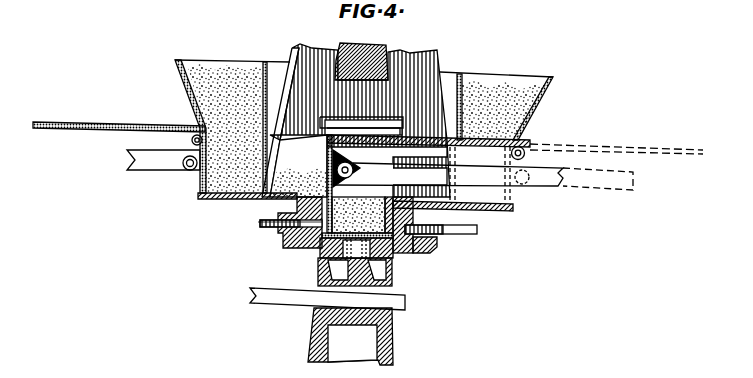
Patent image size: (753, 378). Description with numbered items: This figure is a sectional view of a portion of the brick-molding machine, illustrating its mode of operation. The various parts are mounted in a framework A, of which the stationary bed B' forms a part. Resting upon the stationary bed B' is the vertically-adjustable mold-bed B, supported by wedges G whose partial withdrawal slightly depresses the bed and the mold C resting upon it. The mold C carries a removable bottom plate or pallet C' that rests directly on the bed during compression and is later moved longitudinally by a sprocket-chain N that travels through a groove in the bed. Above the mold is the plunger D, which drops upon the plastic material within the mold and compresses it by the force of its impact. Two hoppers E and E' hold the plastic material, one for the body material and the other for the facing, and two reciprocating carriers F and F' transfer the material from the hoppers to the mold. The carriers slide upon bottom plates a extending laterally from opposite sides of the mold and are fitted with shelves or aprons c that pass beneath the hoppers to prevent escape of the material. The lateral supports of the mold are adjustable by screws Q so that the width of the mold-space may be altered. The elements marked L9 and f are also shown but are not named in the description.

The framework A is at (436, 66).
The plunger D is at (378, 56).
The hopper E is at (498, 94).
The hopper E' is at (216, 126).
The shelf or apron c is at (95, 123).
The lever bar L9 is at (547, 178).
The reciprocating carrier F is at (301, 184).
The reciprocating carrier F' is at (208, 169).
The bottom plate a is at (197, 198).
The mold C is at (287, 226).
The pallet or removable bottom plate C' is at (440, 253).
The sprocket-chain N is at (320, 257).
The mold-bed B is at (341, 272).
The threaded rod f is at (417, 245).
The screw Q is at (460, 234).
The supporting-wedge G is at (407, 305).
The stationary bed B' is at (332, 336).